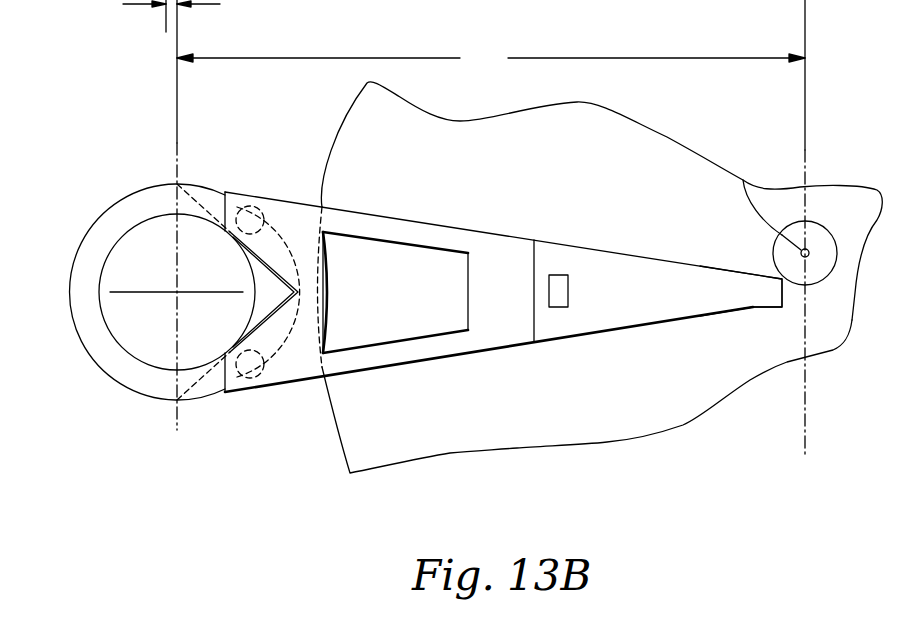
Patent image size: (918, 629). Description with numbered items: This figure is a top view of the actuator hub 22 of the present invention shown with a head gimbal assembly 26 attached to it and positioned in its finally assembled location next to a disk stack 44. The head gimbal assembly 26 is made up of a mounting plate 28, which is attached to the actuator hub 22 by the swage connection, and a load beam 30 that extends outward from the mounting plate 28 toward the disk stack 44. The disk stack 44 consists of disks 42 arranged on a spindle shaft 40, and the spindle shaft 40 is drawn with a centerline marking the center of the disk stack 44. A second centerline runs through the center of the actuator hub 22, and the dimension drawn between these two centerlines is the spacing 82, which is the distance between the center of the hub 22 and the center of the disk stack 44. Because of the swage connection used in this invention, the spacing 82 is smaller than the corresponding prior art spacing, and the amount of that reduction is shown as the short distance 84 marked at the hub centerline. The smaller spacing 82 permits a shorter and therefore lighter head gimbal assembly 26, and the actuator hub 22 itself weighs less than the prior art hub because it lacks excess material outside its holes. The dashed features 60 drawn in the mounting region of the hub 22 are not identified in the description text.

The actuator hub 22 is at (127, 390).
The head gimbal assembly 26 is at (512, 222).
The mounting plate 28 is at (443, 224).
The load beam 30 is at (692, 262).
The spindle shaft 40 is at (743, 180).
The disks 42 is at (607, 445).
The disk stack 44 is at (711, 452).
The locating holes 60 is at (260, 200).
The spacing 82 is at (491, 62).
The distance 84 is at (190, 16).